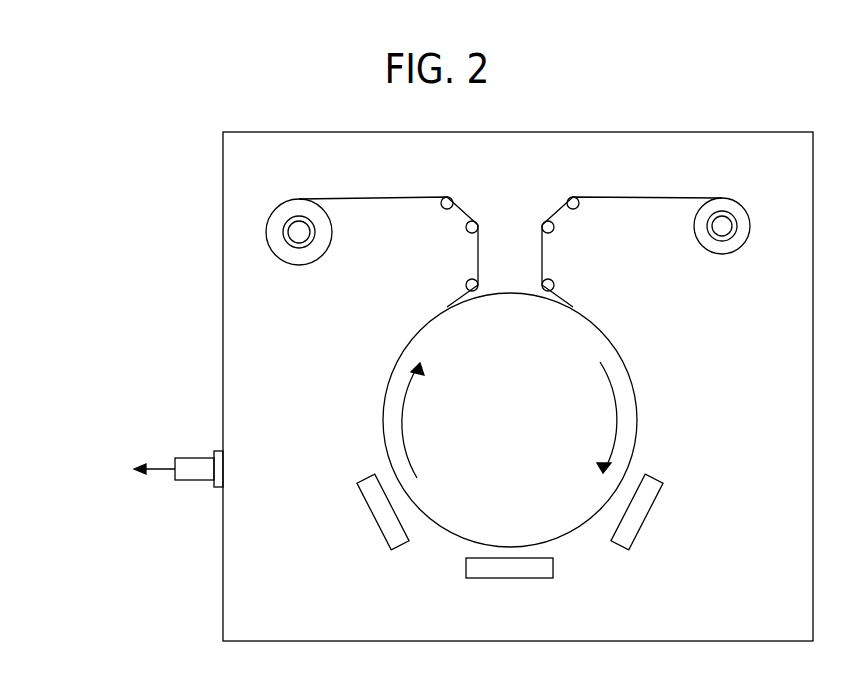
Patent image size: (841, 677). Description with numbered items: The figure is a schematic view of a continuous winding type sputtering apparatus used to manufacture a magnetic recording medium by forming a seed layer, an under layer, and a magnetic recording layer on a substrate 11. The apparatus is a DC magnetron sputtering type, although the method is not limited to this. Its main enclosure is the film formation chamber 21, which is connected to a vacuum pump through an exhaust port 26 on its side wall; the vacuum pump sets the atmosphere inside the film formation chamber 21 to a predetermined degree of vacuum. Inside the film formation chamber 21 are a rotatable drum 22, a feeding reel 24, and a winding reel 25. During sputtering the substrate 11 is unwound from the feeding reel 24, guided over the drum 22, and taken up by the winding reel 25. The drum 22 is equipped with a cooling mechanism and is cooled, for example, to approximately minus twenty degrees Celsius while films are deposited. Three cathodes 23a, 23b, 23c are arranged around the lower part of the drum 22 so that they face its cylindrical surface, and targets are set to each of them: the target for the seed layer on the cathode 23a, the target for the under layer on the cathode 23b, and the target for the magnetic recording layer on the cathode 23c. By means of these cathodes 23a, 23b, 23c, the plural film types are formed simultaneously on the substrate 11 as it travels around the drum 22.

The substrate 11 is at (543, 256).
The film formation chamber 21 is at (223, 255).
The drum 22 is at (392, 402).
The cathode 23a is at (642, 522).
The cathode 23b is at (517, 578).
The cathode 23c is at (377, 522).
The feeding reel 24 is at (735, 210).
The winding reel 25 is at (282, 216).
The exhaust port 26 is at (187, 480).